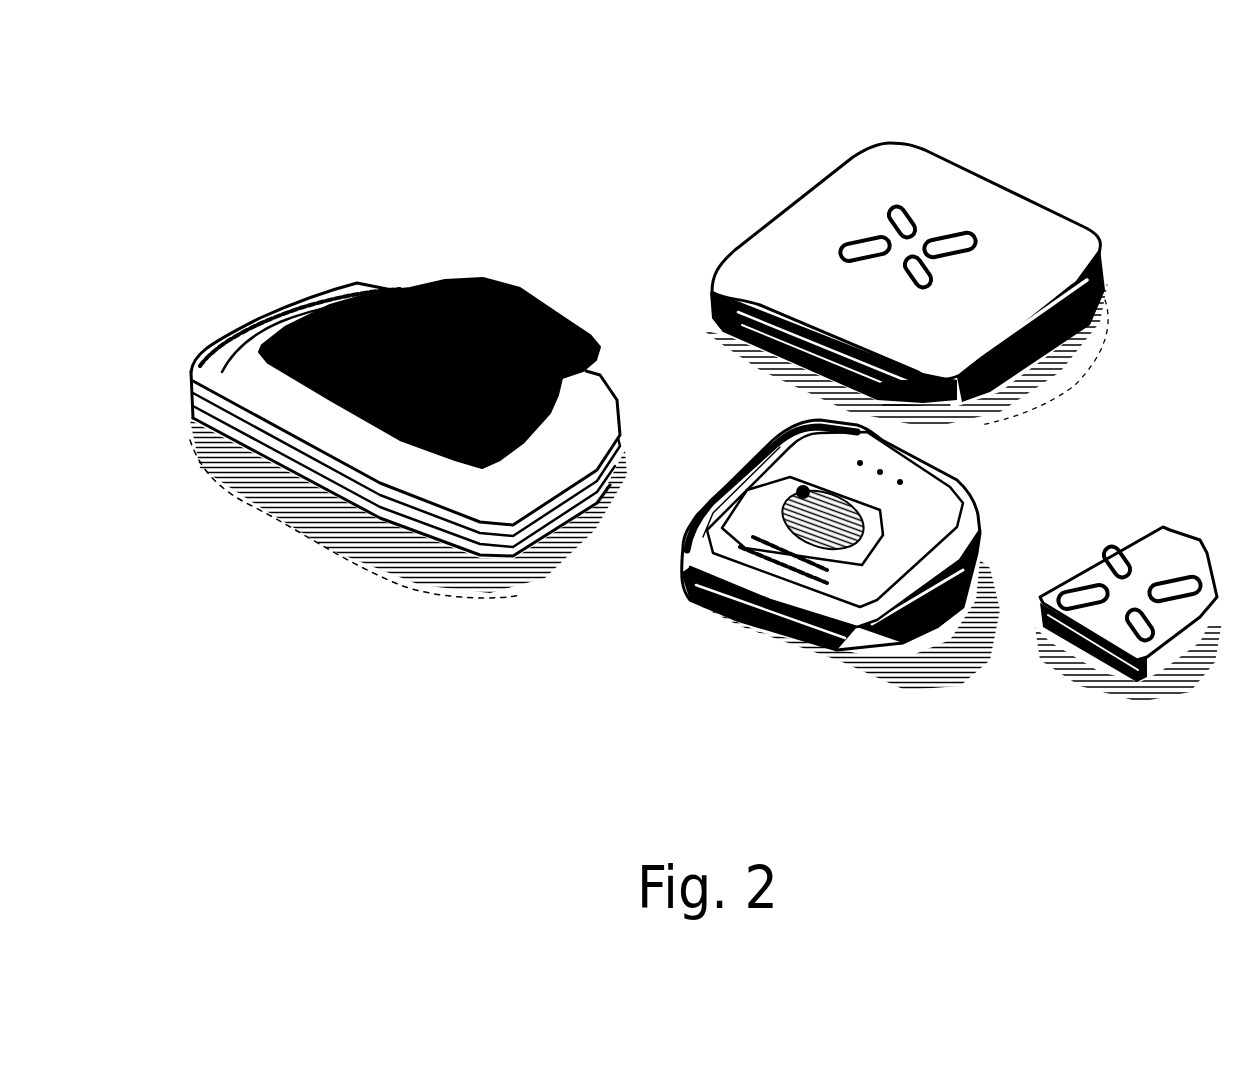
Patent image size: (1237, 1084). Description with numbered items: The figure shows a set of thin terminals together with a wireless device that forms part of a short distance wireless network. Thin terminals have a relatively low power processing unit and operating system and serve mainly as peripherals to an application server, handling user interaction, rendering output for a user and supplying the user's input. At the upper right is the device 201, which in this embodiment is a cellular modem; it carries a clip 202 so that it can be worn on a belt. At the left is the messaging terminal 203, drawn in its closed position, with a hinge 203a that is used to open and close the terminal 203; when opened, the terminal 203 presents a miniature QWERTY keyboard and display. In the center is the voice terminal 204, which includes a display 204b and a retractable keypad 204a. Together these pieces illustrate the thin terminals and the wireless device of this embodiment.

The device 201 is at (767, 193).
The clip 202 is at (1163, 663).
The messaging terminal 203 is at (333, 497).
The hinge 203a is at (460, 265).
The voice terminal 204 is at (836, 576).
The retractable keypad 204a is at (693, 593).
The display 204b is at (893, 500).